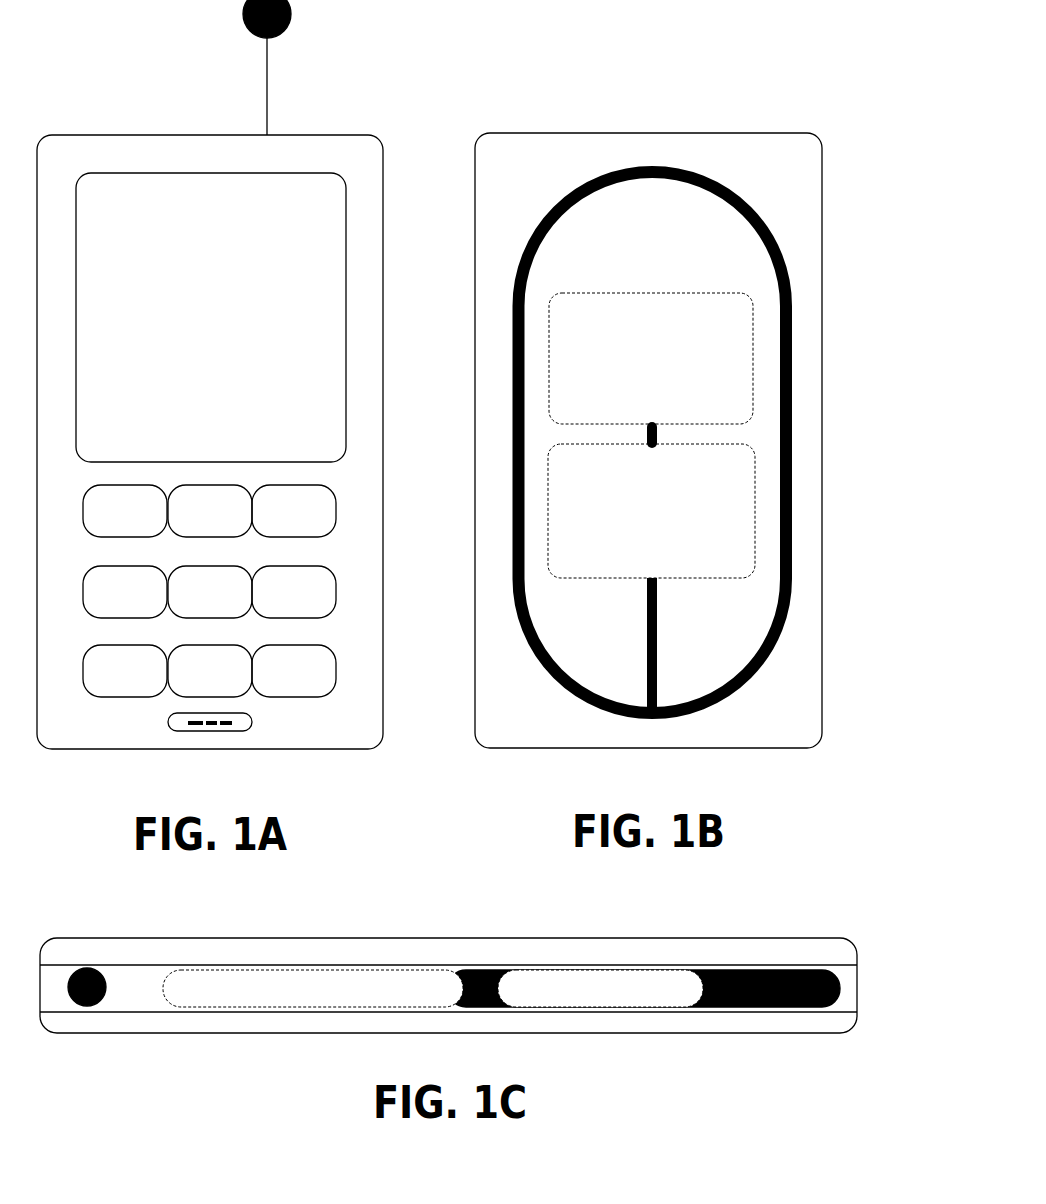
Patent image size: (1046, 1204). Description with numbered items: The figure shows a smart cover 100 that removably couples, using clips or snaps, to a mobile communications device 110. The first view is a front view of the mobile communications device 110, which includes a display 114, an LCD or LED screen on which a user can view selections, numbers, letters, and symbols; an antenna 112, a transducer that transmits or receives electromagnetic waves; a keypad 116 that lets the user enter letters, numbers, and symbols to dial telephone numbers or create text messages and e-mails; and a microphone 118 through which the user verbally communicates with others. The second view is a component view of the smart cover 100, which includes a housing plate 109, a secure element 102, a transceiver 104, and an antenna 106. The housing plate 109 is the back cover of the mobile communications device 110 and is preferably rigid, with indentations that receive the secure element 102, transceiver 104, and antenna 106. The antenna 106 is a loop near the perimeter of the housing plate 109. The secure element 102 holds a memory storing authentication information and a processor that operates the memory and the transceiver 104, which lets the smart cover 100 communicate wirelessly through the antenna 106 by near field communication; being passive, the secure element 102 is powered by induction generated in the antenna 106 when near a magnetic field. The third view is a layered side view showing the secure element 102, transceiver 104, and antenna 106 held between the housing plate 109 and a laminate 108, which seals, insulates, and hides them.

In FIG. 1B, the smart cover 100 is at (650, 401).
In FIG. 1C, the smart cover 100 is at (448, 987).
In FIG. 1B, the secure element 102 is at (575, 327).
In FIG. 1C, the secure element 102 is at (261, 948).
In FIG. 1B, the transceiver 104 is at (725, 473).
In FIG. 1C, the transceiver 104 is at (672, 951).
In FIG. 1B, the antenna 106 is at (708, 462).
In FIG. 1C, the antenna 106 is at (454, 1022).
In FIG. 1C, the laminate 108 is at (448, 899).
In FIG. 1B, the housing plate 109 is at (677, 412).
In FIG. 1C, the housing plate 109 is at (448, 1036).
In FIG. 1A, the mobile communications device 110 is at (210, 404).
In FIG. 1A, the antenna 112 is at (337, 67).
In FIG. 1A, the display 114 is at (261, 279).
In FIG. 1A, the keypad 116 is at (209, 553).
In FIG. 1A, the microphone 118 is at (147, 759).